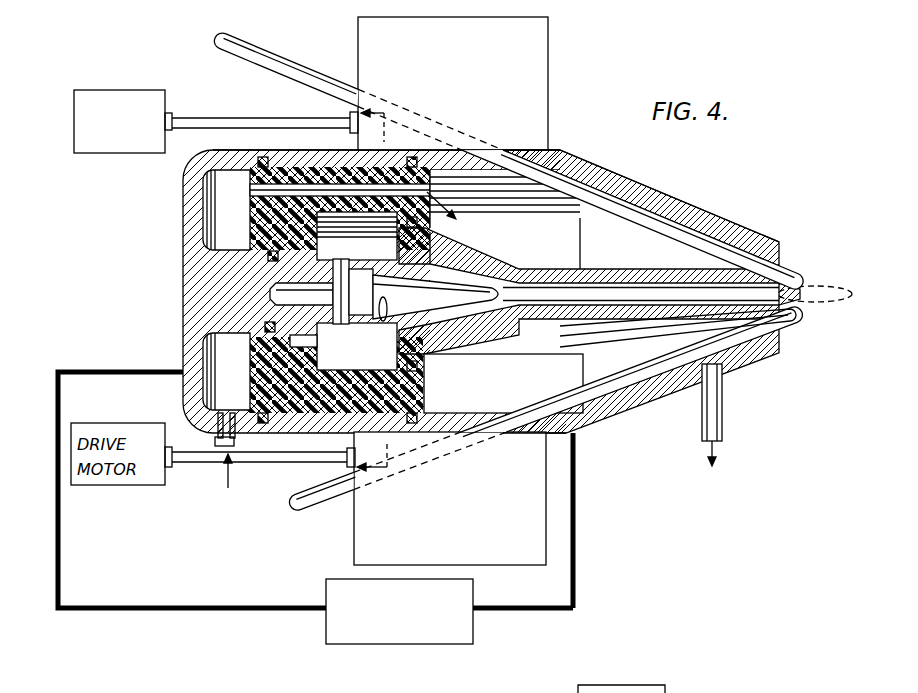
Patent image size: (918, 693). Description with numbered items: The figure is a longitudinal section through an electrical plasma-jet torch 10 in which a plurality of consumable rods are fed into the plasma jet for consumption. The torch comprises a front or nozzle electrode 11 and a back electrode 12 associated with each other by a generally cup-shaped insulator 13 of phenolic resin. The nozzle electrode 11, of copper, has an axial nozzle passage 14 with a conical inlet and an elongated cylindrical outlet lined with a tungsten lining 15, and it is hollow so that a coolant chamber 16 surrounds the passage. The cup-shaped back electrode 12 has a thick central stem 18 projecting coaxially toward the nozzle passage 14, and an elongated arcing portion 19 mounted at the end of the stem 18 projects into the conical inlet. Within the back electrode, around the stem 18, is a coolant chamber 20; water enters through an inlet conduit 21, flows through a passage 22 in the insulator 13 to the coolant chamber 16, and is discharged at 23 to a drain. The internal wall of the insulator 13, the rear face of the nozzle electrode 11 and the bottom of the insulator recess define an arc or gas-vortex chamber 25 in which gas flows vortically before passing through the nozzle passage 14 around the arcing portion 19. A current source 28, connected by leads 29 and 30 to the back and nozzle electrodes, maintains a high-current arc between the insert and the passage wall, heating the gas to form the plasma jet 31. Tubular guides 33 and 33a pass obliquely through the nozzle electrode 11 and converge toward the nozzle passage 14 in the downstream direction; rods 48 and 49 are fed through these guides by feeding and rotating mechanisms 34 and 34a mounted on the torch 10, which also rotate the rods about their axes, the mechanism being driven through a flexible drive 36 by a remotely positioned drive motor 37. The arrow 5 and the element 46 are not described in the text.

The feed direction arrow 5 is at (380, 291).
The electrical plasma-jet torch 10 is at (721, 213).
The front or nozzle electrode 11 is at (616, 410).
The back electrode 12 is at (192, 401).
The insulator 13 is at (417, 396).
The nozzle passage 14 is at (568, 303).
The lining 15 is at (527, 310).
The coolant chamber 16 is at (502, 219).
The central stem 18 is at (228, 266).
The arcing portion 19 is at (421, 284).
The coolant chamber 20 is at (240, 356).
The inlet conduit 21 is at (233, 444).
The passage 22 is at (250, 192).
The water discharge 23 is at (724, 411).
The arc or gas-vortex chamber 25 is at (338, 290).
The current source 28 is at (461, 650).
The lead 29 is at (246, 613).
The lead 30 is at (573, 570).
The plasma jet 31 is at (842, 289).
The tubular passage or guide 33 is at (668, 248).
The tubular passage or guide 33a is at (672, 350).
The feeding and rotating mechanism 34 is at (533, 70).
The feeding and rotating mechanism 34a is at (546, 492).
The flexible drive 36 is at (209, 117).
The drive motor 37 is at (107, 88).
The control unit 46 is at (633, 692).
The rod 48 is at (662, 198).
The rod 49 is at (647, 368).